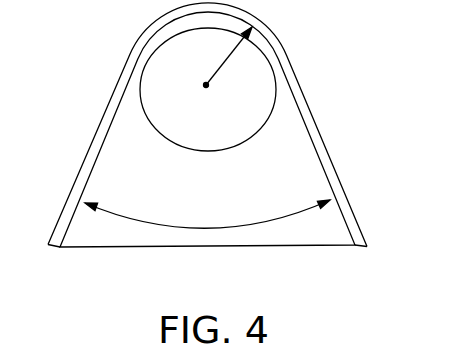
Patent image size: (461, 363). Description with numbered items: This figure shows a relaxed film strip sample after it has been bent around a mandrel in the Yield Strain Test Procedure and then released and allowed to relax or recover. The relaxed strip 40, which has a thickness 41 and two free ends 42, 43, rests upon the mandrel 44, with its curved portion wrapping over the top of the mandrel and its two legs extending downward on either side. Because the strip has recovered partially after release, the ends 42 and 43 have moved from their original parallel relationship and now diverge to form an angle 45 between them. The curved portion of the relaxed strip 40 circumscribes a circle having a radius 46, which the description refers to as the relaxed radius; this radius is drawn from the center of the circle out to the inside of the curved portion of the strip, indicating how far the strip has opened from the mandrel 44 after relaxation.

The relaxed strip 40 is at (305, 87).
The thickness 41 is at (280, 147).
The end 42 is at (58, 218).
The end 43 is at (362, 222).
The mandrel 44 is at (221, 122).
The angle 45 is at (205, 229).
The radius 46 is at (227, 58).